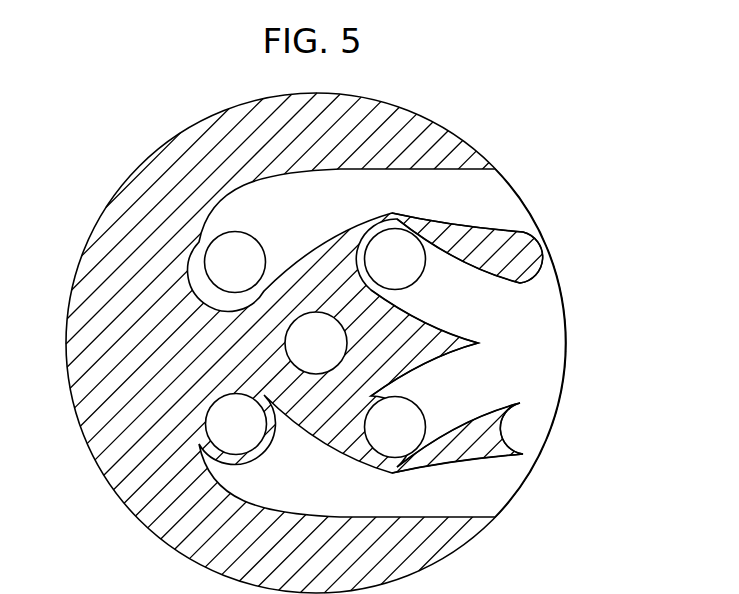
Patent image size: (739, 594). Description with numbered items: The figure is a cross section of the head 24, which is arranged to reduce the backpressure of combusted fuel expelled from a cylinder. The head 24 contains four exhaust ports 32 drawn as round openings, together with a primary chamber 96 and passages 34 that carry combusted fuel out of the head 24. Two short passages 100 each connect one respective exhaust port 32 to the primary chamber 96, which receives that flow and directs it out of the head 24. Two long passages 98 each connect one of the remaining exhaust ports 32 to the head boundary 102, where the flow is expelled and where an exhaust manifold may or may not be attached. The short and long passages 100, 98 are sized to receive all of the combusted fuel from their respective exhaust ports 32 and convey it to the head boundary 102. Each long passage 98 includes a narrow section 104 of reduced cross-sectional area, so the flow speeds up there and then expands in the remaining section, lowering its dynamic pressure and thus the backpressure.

The head 24 is at (129, 138).
The exhaust ports 32 is at (259, 241).
The passages 34 is at (437, 188).
The primary chamber 96 is at (554, 299).
The long passages 98 is at (501, 193).
The short passages 100 is at (485, 314).
The head boundary 102 is at (534, 213).
The narrow section 104 is at (392, 170).